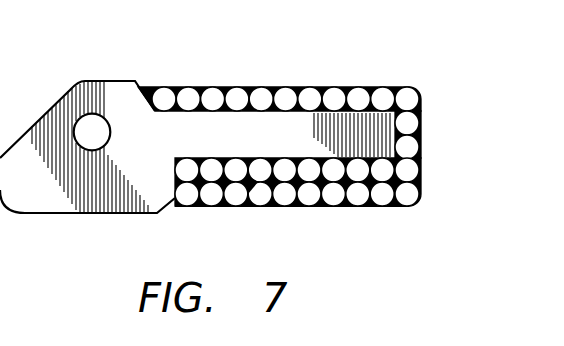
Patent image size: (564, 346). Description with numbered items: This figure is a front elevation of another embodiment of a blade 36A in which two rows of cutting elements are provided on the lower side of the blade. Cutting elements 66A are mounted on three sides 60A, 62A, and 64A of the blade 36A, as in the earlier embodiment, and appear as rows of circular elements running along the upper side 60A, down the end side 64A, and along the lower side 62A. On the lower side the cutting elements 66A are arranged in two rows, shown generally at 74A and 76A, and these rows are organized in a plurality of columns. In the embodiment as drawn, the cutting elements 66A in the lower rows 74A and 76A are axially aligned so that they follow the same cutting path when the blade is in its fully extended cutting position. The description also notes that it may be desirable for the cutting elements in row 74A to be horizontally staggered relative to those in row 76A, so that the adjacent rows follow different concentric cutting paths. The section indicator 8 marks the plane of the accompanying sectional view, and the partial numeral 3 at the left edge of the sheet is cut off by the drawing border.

The blade 36A is at (150, 86).
The side of blade 60A is at (397, 88).
The side of blade 64A is at (418, 137).
The side of blade 62A is at (296, 207).
The lower row of cutting elements 74A is at (210, 207).
The lower row of cutting elements 76A is at (258, 178).
The cutting elements 66A is at (258, 97).
The section line 8- 8 is at (370, 65).
The partial numeral 3 is at (2, 251).